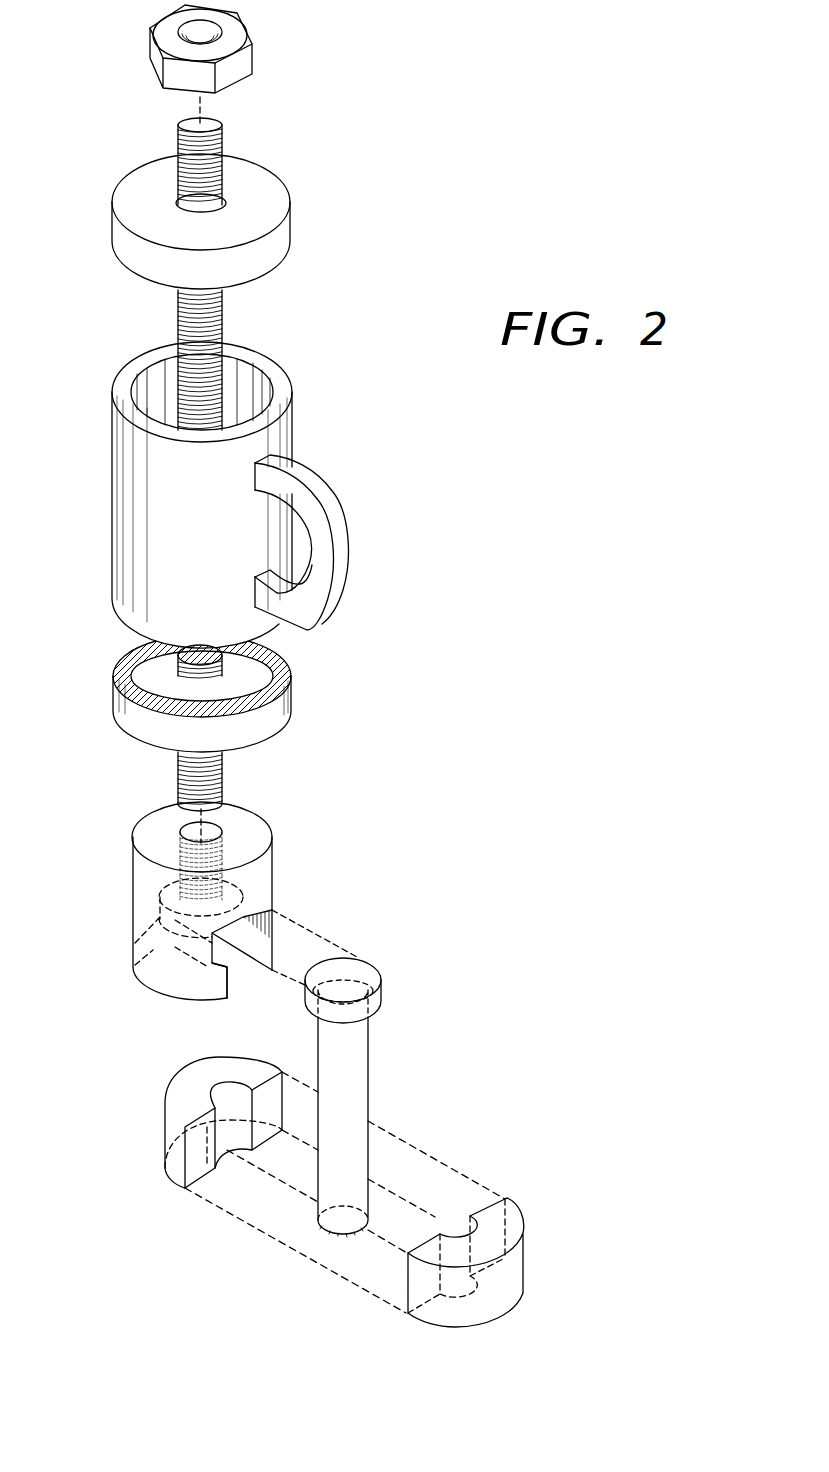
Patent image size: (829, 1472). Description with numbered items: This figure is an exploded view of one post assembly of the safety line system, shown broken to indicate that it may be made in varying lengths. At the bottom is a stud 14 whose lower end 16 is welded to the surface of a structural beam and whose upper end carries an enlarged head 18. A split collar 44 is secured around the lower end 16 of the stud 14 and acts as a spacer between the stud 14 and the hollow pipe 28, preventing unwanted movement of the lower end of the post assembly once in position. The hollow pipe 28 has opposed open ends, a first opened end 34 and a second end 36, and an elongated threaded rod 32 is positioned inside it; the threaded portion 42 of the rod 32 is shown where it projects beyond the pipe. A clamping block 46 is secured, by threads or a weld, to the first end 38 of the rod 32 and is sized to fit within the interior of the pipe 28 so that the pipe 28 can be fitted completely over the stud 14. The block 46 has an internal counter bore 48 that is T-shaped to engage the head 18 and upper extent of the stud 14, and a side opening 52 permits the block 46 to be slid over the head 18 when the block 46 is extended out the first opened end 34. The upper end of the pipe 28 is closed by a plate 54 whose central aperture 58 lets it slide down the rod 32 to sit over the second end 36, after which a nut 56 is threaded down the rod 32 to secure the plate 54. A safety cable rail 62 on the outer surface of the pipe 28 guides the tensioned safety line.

The stud 14 is at (373, 1085).
The lower end 16 is at (375, 1222).
The enlarged head 18 is at (377, 1005).
The hollow pipe 28 is at (128, 487).
The threaded rod 32 is at (178, 372).
The first opened end 34 is at (283, 723).
The second end 36 is at (280, 385).
The first end 38 is at (213, 806).
The threaded rod 42 is at (220, 118).
The split collar 44 is at (173, 1166).
The clamping block 46 is at (143, 922).
The internal counter bore 48 is at (248, 936).
The side opening 52 is at (243, 973).
The plate 54 is at (277, 240).
The nut 56 is at (252, 54).
The central aperture 58 is at (173, 203).
The safety cable rail 62 is at (343, 572).